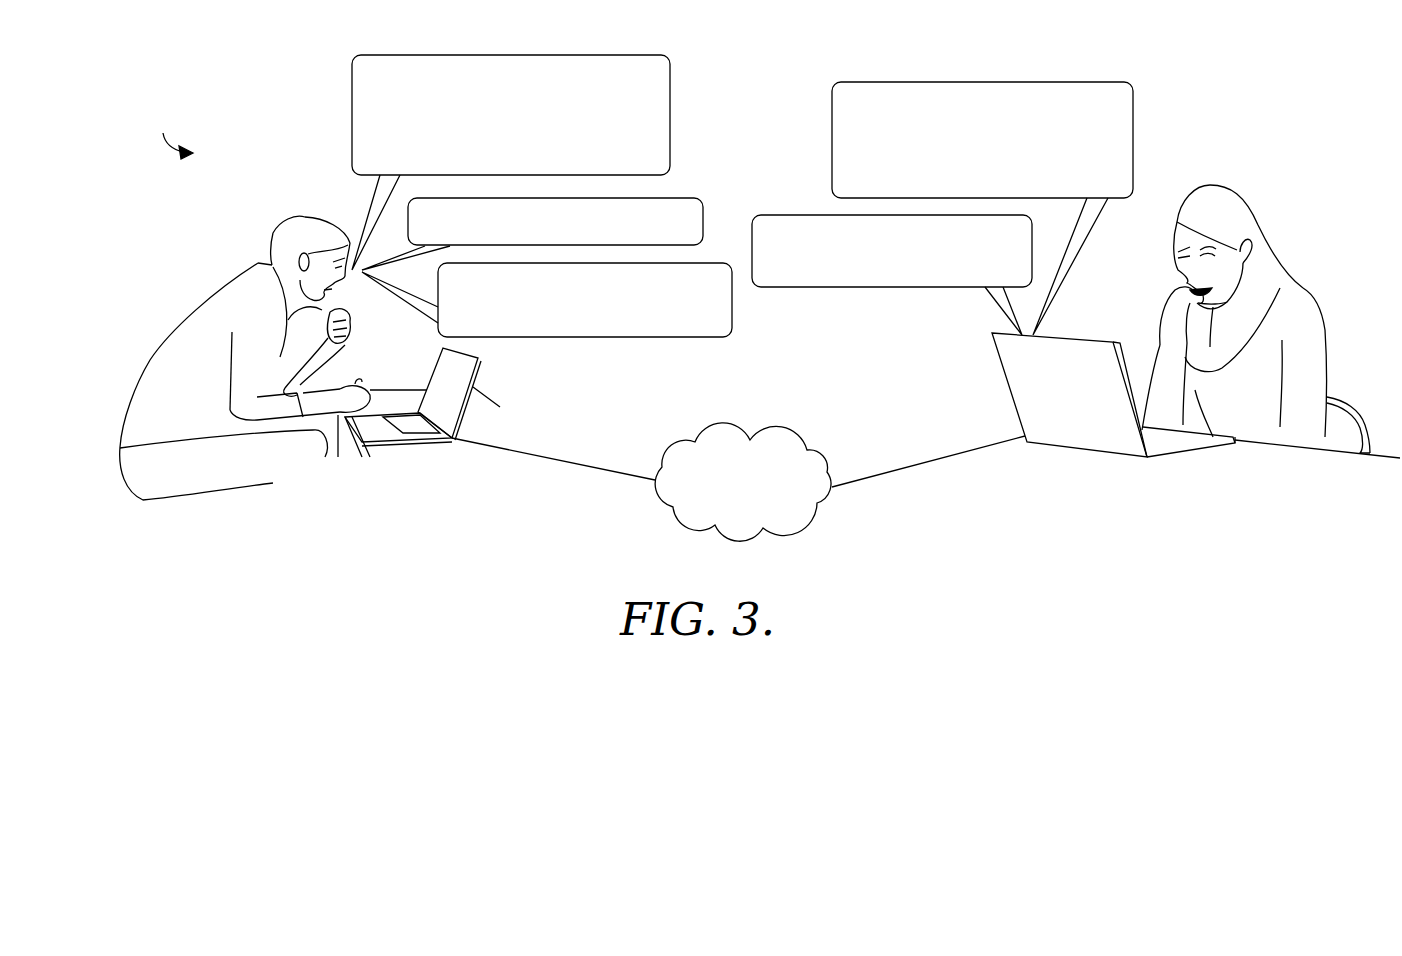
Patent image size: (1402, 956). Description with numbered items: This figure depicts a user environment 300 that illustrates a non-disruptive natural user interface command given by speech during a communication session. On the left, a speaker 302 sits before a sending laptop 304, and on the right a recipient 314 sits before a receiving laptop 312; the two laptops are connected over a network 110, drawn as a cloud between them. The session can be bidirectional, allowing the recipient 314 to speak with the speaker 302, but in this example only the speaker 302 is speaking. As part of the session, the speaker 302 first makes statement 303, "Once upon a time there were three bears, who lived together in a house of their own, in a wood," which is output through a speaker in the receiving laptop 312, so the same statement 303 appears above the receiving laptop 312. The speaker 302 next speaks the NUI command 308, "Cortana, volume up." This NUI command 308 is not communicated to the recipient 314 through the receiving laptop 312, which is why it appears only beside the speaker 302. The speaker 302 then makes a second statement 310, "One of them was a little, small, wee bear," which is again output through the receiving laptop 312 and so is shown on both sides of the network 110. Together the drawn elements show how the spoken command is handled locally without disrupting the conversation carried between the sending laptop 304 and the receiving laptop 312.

The user environment 300 is at (169, 132).
The speaker 302 is at (210, 293).
The statement 303 is at (651, 58).
The sending laptop 304 is at (408, 443).
The NUI command 308 is at (686, 200).
The second statement 310 is at (728, 256).
The receiving laptop 312 is at (1204, 452).
The recipient 314 is at (1304, 290).
The network 110 is at (760, 495).